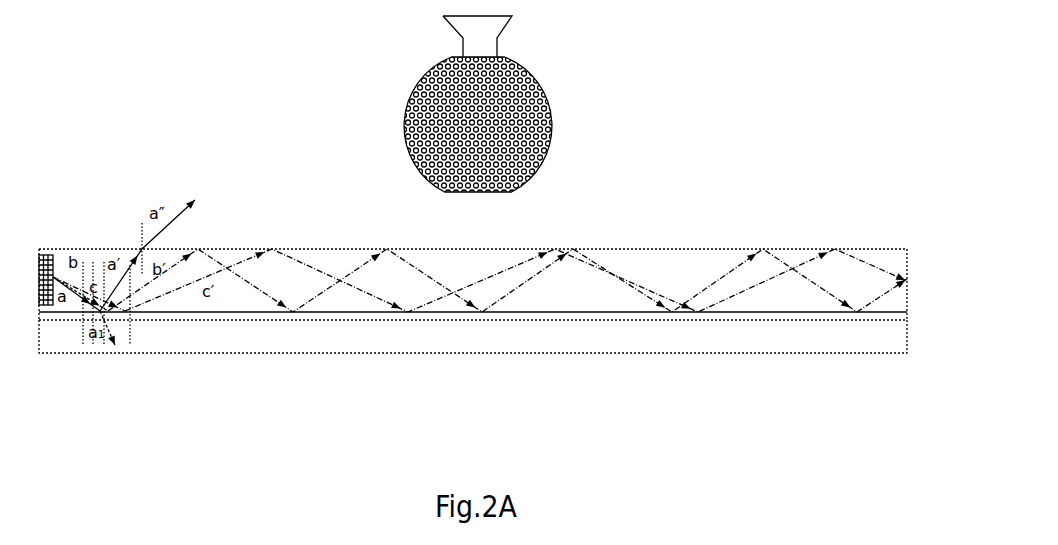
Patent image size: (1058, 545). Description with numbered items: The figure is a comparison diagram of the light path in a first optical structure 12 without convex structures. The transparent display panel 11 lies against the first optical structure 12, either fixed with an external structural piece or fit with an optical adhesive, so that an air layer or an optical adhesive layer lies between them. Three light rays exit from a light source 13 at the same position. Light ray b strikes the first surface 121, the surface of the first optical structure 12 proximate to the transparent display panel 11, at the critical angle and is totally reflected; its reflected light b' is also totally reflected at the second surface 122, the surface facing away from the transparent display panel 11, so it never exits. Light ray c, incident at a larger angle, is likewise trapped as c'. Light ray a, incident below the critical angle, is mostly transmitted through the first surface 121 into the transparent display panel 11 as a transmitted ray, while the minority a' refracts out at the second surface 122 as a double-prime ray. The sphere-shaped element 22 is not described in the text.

The light source 22 is at (552, 110).
The first optical structure 12 is at (527, 296).
The second surface 122 is at (710, 249).
The first surface 121 is at (722, 312).
The transparent display panel 11 is at (345, 337).
The light source 13 is at (53, 300).